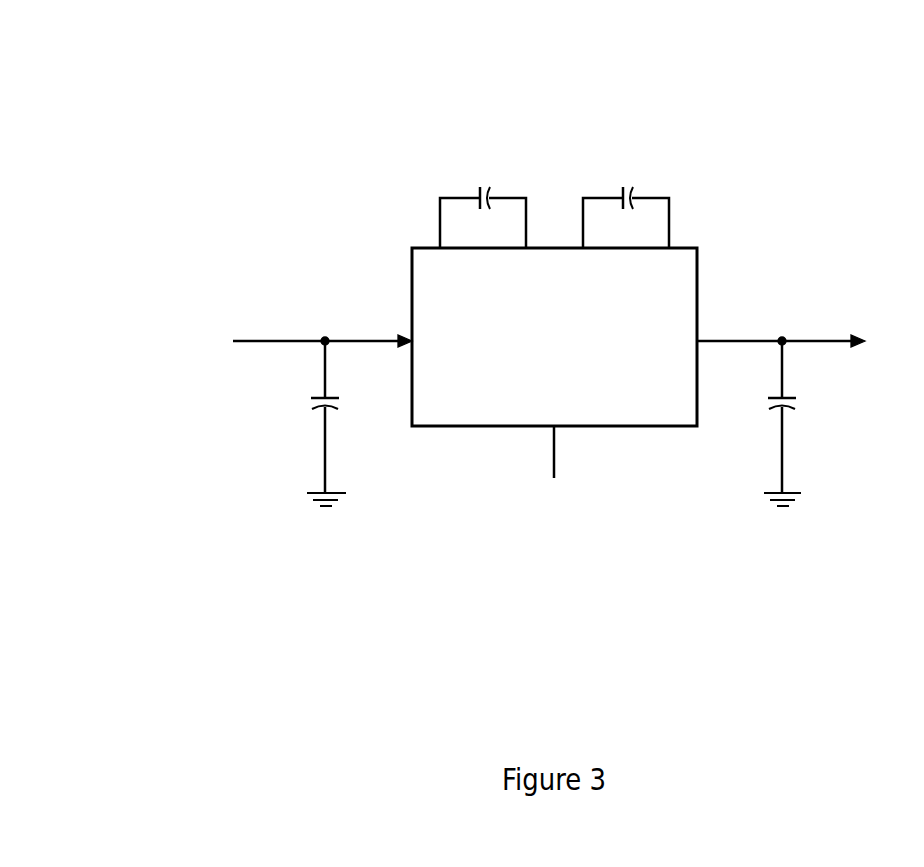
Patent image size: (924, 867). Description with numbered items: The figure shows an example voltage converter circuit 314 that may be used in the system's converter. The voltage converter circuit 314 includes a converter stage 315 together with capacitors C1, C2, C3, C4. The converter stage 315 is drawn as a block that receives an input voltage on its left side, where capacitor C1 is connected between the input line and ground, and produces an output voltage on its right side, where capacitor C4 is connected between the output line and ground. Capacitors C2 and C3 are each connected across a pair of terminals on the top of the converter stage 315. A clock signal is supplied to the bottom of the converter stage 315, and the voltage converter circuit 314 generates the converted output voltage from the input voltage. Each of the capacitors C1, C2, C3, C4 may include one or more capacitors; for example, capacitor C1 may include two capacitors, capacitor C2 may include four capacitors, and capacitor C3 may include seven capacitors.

The voltage converter circuit 314 is at (139, 63).
The converter stage 315 is at (584, 347).
The capacitor C1 is at (302, 423).
The capacitor C2 is at (483, 201).
The capacitor C3 is at (626, 201).
The capacitor C4 is at (763, 423).